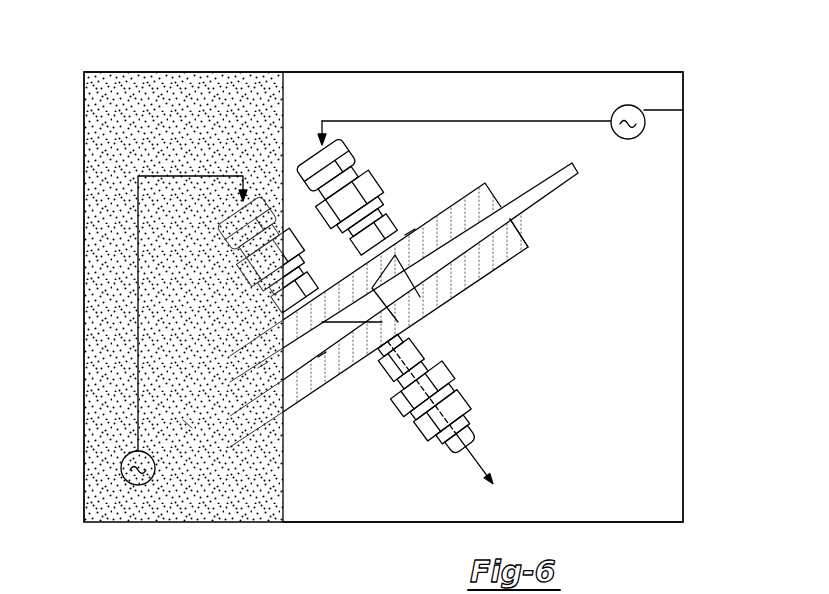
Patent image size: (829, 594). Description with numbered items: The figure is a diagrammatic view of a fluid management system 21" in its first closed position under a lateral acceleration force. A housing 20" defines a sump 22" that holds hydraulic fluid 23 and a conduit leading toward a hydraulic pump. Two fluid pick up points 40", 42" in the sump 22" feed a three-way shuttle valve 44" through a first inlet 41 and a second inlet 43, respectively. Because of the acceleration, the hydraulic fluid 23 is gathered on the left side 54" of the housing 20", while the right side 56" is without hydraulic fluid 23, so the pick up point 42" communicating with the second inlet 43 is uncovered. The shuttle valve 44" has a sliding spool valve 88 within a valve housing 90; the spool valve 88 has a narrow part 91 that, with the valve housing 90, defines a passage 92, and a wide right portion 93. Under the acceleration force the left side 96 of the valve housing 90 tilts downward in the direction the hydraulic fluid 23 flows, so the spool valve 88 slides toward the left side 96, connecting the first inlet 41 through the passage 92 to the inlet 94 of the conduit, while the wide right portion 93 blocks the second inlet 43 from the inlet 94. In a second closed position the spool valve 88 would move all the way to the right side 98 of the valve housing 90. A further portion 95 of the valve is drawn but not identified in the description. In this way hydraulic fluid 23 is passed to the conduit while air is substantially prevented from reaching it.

The housing 20 is at (683, 150).
The fluid management system 21 is at (645, 46).
The sump 22 is at (636, 383).
The hydraulic fluid 23 is at (120, 128).
The fluid pick up point 40 is at (121, 470).
The first inlet 41 is at (243, 207).
The fluid pick up point 42 is at (683, 110).
The second inlet 43 is at (319, 139).
The shuttle valve 44 is at (411, 213).
The left side 54 is at (84, 220).
The right side 56 is at (683, 212).
The sliding spool valve 88 is at (404, 281).
The valve housing 90 is at (487, 265).
The narrow part 91 is at (335, 336).
The passage 92 is at (320, 358).
The wide right portion 93 is at (418, 287).
The inlet 94 is at (418, 348).
The hidden clamp member 95 is at (262, 370).
The left side 96 is at (187, 424).
The right side 98 is at (520, 228).